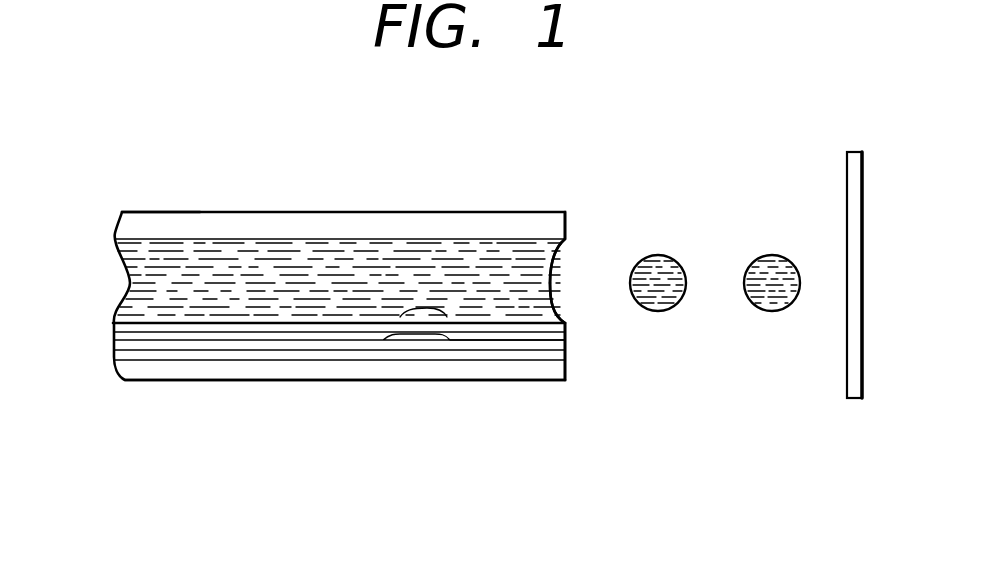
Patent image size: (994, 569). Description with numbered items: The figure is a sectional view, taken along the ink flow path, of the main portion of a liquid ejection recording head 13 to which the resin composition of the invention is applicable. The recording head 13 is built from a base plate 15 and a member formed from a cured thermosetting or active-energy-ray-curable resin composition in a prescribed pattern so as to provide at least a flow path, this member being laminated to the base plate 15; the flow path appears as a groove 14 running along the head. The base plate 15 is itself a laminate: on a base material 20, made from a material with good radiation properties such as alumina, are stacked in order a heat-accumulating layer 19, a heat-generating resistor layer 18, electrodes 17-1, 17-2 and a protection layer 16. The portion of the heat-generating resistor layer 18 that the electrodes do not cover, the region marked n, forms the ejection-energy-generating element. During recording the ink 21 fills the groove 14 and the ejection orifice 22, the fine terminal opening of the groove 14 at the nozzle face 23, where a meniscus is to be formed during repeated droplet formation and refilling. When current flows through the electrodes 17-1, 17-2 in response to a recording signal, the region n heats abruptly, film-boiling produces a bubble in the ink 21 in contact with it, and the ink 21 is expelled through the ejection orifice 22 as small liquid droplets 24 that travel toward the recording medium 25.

The recording head 13 is at (215, 212).
The groove 14 is at (268, 240).
The ink 21 is at (162, 252).
The heat-generating region n is at (427, 307).
The nozzle face 23 is at (562, 263).
The ejection orifice 22 is at (577, 308).
The base plate 15 is at (105, 322).
The protection layer 16 is at (158, 330).
The electrode 17-1 is at (213, 340).
The electrode 17-2 is at (520, 340).
The heat-generating resistor layer 18 is at (263, 347).
The heat-accumulating layer 19 is at (322, 360).
The base material 20 is at (392, 373).
The liquid droplets 24 is at (620, 247).
The recording medium 25 is at (847, 190).